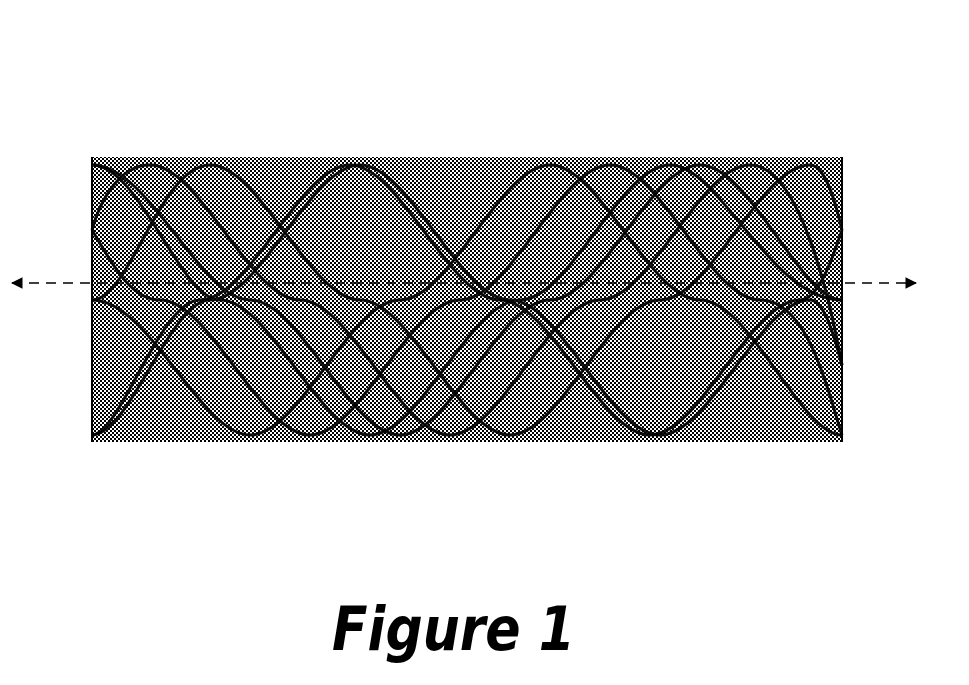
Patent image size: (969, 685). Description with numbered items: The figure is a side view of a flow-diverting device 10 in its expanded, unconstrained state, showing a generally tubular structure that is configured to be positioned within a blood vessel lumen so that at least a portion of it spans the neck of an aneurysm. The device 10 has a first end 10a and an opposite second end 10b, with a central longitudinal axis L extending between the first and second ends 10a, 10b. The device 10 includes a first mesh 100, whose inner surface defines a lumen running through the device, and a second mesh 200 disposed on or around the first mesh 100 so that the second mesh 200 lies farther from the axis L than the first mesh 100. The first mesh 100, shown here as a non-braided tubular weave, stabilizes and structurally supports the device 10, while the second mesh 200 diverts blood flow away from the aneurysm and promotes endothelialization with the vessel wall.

The flow-diverting device 10 is at (461, 236).
The first mesh 100 is at (518, 178).
The second mesh 200 is at (318, 185).
The first end 10a is at (75, 350).
The second end 10b is at (850, 348).